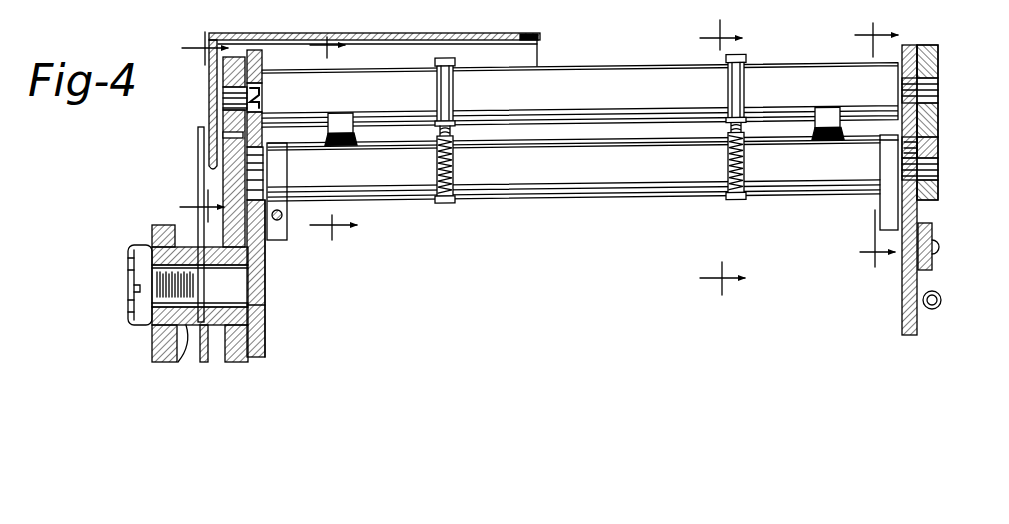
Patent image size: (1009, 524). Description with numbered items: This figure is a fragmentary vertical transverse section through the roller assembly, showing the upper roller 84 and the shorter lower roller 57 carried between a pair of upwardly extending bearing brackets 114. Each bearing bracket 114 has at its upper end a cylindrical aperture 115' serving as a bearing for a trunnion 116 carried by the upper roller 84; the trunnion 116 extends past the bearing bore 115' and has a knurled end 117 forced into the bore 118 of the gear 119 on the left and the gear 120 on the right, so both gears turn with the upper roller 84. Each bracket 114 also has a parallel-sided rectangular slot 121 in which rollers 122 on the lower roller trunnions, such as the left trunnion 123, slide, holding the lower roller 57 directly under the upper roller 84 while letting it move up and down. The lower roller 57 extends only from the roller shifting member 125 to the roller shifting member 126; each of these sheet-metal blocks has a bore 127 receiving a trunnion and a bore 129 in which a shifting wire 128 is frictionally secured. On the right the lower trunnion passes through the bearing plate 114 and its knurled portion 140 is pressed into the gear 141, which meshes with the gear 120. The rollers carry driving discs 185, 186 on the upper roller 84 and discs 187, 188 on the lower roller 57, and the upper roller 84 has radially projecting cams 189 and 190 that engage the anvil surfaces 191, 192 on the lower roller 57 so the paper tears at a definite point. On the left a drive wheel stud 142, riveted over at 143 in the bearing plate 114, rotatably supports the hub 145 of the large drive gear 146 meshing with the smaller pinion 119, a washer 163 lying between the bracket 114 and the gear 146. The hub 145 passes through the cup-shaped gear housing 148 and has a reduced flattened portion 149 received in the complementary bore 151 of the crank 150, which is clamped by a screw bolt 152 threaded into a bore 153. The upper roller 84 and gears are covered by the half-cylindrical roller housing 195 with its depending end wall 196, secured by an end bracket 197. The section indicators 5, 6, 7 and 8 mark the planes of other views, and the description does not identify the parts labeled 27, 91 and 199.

The top plate 27 is at (410, 36).
The roller housing 195 is at (521, 35).
The slot 121 is at (220, 183).
The gear housing 148 is at (198, 155).
The gear 119 is at (234, 60).
The knurled end 117 is at (225, 93).
The end wall 196 is at (225, 100).
The aperture 115' is at (576, 101).
The bore 118 is at (225, 112).
The trunnion 116 is at (257, 98).
The gear 120 is at (945, 33).
The knurled portion 140 is at (938, 175).
The gear 141 is at (938, 190).
The riveted end 143 is at (265, 273).
The bearing bracket 114 is at (262, 320).
The drive gear 146 is at (262, 347).
The drive wheel stud 142 is at (252, 307).
The roller 122 is at (280, 240).
The roller shifting member 125 is at (283, 214).
The shifting wire 128 is at (280, 220).
The roller shifting member 126 is at (878, 203).
The bore 129 is at (885, 150).
The upper roller 84 is at (568, 90).
The lower roller 57 is at (590, 180).
The driving disc 185 is at (453, 60).
The driving disc 187 is at (448, 206).
The driving disc 186 is at (747, 60).
The driving disc 188 is at (740, 208).
The thread 91 is at (456, 171).
The cam 189 is at (357, 136).
The anvil surface 191 is at (350, 104).
The cam 190 is at (845, 137).
The anvil surface 192 is at (836, 102).
The trunnion 123 is at (278, 158).
The bore 127 is at (278, 183).
The end bracket 197 is at (165, 245).
The reduced cylindrical portion 149 is at (152, 246).
The bore 199 is at (250, 292).
The bore 153 is at (147, 288).
The screw bolt 152 is at (131, 272).
The bore 151 is at (135, 308).
The crank 150 is at (150, 350).
The hub 145 is at (190, 350).
The washer 163 is at (218, 234).
The section line 5- 5 is at (199, 123).
The section line 8- 8 is at (326, 142).
The section line 7- 7 is at (722, 158).
The section line 6- 6 is at (876, 140).